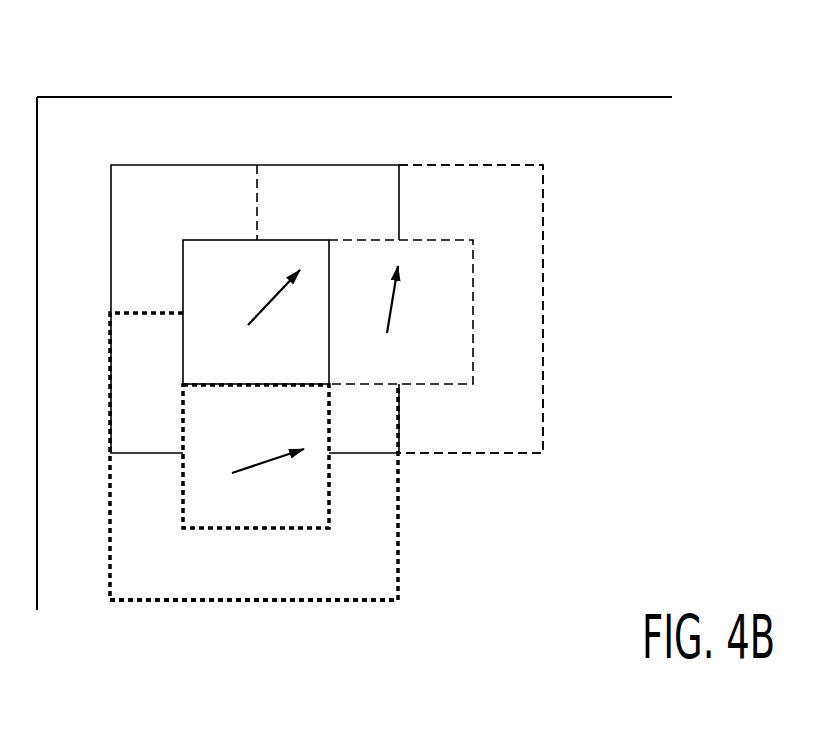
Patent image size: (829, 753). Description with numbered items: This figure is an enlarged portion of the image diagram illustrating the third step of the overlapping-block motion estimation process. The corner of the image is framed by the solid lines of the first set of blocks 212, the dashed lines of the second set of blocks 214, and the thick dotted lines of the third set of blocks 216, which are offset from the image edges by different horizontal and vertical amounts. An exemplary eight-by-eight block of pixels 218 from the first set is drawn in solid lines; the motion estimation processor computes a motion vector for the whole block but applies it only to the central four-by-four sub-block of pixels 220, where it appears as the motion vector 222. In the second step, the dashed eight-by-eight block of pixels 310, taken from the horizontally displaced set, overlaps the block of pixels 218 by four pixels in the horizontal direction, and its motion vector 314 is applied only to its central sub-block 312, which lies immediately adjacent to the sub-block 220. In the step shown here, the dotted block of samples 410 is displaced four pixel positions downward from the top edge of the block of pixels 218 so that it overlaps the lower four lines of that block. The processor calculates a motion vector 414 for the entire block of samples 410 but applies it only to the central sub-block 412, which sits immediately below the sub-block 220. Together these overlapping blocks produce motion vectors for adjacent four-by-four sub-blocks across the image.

The first set of blocks 212 is at (311, 118).
The second set of blocks 214 is at (558, 291).
The third set of blocks 216 is at (188, 620).
The block of pixels 218 is at (183, 165).
The central sub-block of pixels 220 is at (205, 239).
The motion vector 222 is at (262, 312).
The second block of pixels 310 is at (460, 165).
The central sub-block 312 is at (447, 240).
The motion vector 314 is at (392, 303).
The block of samples 410 is at (323, 601).
The central sub-block 412 is at (285, 530).
The motion vector 414 is at (260, 458).